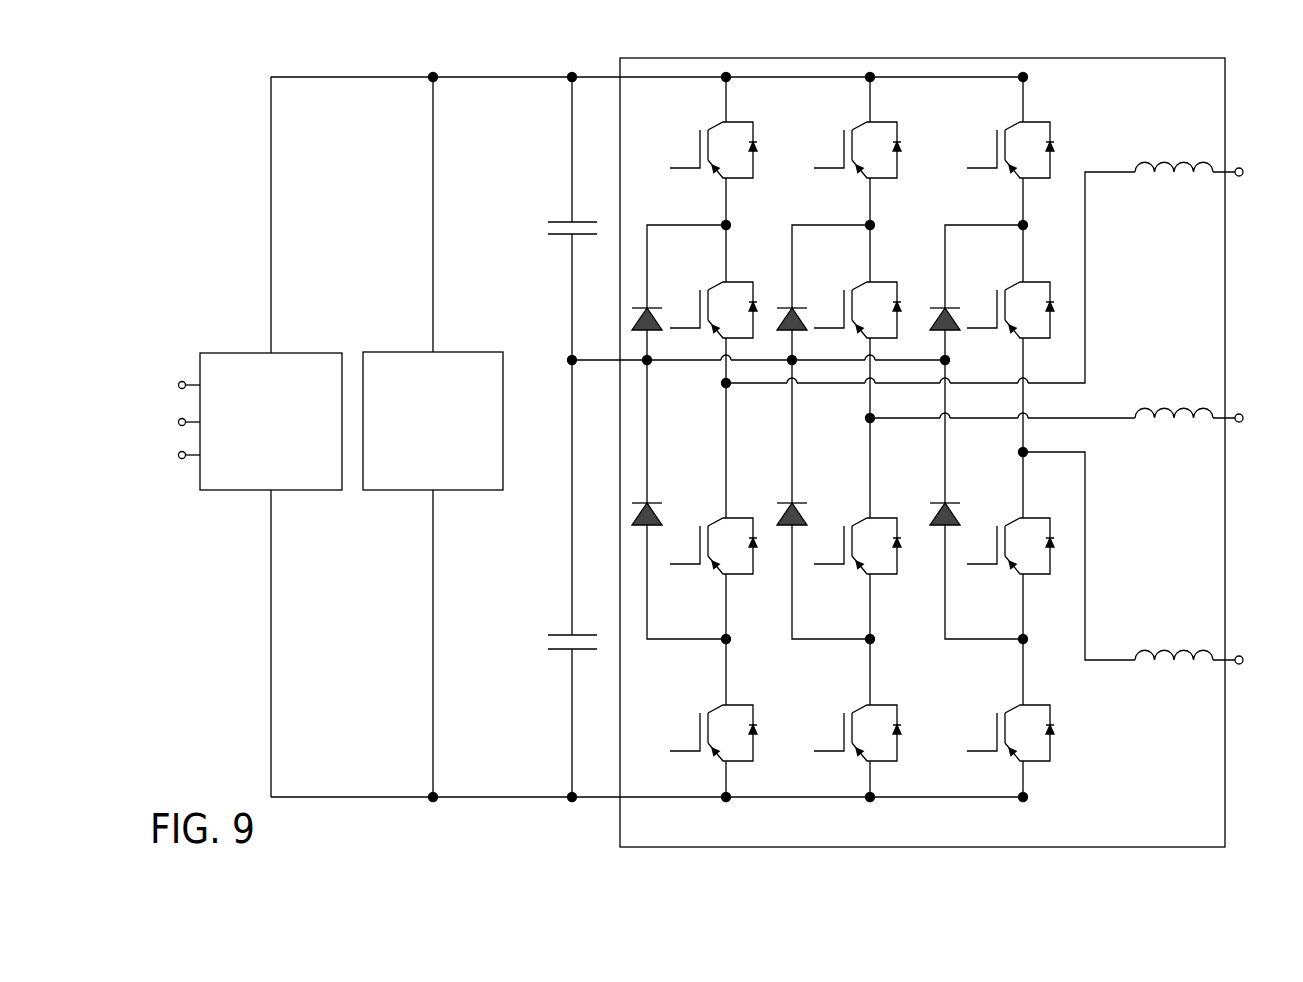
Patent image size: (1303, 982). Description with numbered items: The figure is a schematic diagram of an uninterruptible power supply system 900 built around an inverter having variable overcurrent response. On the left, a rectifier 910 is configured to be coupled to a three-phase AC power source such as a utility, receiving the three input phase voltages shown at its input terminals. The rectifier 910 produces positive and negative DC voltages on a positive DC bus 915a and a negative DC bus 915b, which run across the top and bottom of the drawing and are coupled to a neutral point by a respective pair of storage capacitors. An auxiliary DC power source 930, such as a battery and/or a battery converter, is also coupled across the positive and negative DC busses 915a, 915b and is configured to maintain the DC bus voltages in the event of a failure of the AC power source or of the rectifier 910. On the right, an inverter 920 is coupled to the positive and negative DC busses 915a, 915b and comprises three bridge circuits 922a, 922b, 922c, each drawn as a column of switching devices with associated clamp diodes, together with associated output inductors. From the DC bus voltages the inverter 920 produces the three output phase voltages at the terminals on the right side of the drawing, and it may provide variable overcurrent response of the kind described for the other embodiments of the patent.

The UPS system 900 is at (193, 90).
The rectifier 910 is at (238, 491).
The positive DC bus 915a is at (527, 77).
The negative DC bus 915b is at (530, 797).
The inverter 920 is at (922, 847).
The bridge circuit 922a is at (702, 113).
The bridge circuit 922b is at (830, 113).
The bridge circuit 922c is at (969, 113).
The auxiliary DC power source 930 is at (385, 491).